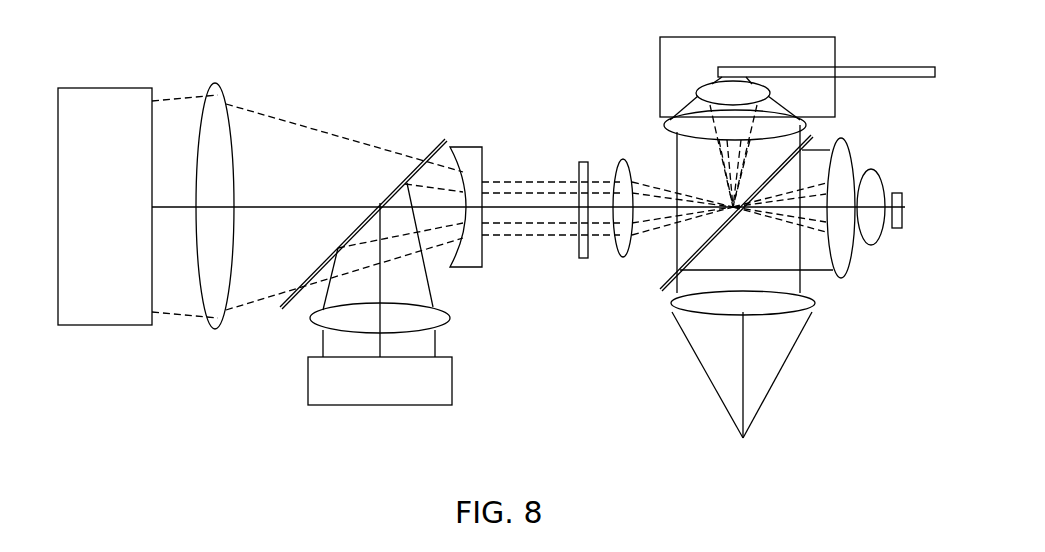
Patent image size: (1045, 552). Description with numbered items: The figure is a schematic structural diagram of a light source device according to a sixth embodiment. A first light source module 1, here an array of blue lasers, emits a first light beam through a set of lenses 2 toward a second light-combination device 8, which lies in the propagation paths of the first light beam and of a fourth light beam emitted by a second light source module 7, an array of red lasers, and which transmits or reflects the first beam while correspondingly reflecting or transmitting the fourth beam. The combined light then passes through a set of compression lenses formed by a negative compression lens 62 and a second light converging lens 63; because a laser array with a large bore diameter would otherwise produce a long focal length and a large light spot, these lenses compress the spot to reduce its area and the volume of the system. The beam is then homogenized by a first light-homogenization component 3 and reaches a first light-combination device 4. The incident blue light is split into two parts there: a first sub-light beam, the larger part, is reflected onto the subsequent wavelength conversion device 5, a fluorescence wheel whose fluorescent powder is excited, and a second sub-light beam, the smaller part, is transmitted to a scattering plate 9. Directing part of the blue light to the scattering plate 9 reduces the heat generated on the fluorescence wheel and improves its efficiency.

The first light source module 1 is at (118, 130).
The set of lenses 2 is at (220, 118).
The first light-homogenization component 3 is at (583, 165).
The first light-combination device 4 is at (813, 138).
The wavelength conversion device 5 is at (827, 91).
The second light source module 7 is at (383, 386).
The second light-combination device 8 is at (382, 197).
The scattering plate 9 is at (904, 222).
The negative compression lens 62 is at (466, 158).
The second light converging lens 63 is at (625, 168).